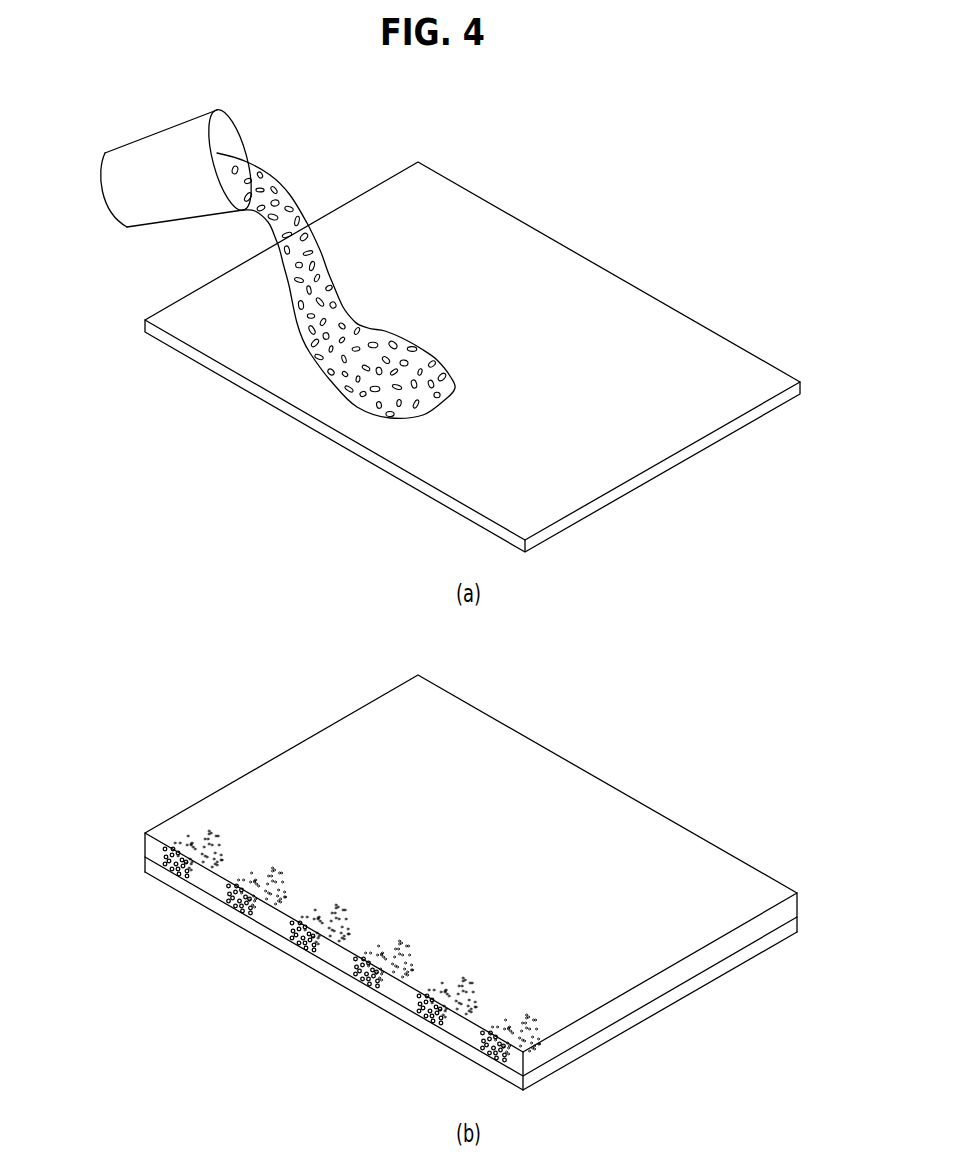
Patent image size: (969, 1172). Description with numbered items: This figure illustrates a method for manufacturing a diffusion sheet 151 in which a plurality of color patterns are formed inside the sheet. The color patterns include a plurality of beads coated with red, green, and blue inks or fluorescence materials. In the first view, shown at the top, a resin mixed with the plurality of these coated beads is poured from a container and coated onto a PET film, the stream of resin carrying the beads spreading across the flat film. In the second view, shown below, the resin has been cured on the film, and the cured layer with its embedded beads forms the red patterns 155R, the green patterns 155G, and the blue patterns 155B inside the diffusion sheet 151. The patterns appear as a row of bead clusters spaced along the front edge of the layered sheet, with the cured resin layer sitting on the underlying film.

The diffusion sheet 151 is at (224, 722).
The green patterns 155G is at (165, 877).
The blue patterns 155B is at (232, 913).
The red patterns 155R is at (292, 952).